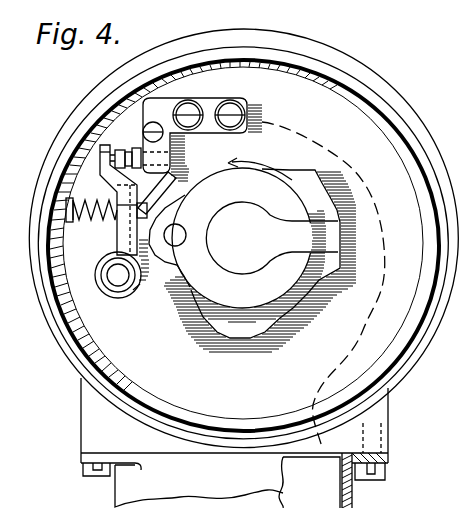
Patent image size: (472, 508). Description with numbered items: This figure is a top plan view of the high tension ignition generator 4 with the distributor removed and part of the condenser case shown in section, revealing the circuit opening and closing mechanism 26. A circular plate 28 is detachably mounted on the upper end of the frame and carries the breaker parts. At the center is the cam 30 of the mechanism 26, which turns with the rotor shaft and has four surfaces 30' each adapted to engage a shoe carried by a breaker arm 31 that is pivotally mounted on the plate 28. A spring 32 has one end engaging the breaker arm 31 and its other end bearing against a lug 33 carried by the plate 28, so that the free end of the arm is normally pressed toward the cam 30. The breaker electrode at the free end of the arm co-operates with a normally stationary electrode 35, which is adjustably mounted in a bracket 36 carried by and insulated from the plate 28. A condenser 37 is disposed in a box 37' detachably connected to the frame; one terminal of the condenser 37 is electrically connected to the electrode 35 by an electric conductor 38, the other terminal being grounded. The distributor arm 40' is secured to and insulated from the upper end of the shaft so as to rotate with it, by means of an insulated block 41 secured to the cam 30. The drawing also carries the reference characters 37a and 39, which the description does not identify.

The high tension ignition generator 4 is at (100, 152).
The circuit opening and closing mechanism 26 is at (255, 110).
The circular plate 28 is at (193, 227).
The cam 30 is at (267, 254).
The cam surfaces 30' is at (239, 248).
The breaker arm 31 is at (124, 233).
The spring 32 is at (95, 201).
The lug 33 is at (70, 205).
The stationary electrode 35 is at (118, 150).
The bracket 36 is at (322, 396).
The condenser 37 is at (226, 326).
The box 37' is at (199, 339).
The pivot 37a is at (116, 290).
The electric conductor 38 is at (383, 258).
The follower 39 is at (134, 294).
The distributor arm 40' is at (272, 238).
The insulated block 41 is at (253, 181).